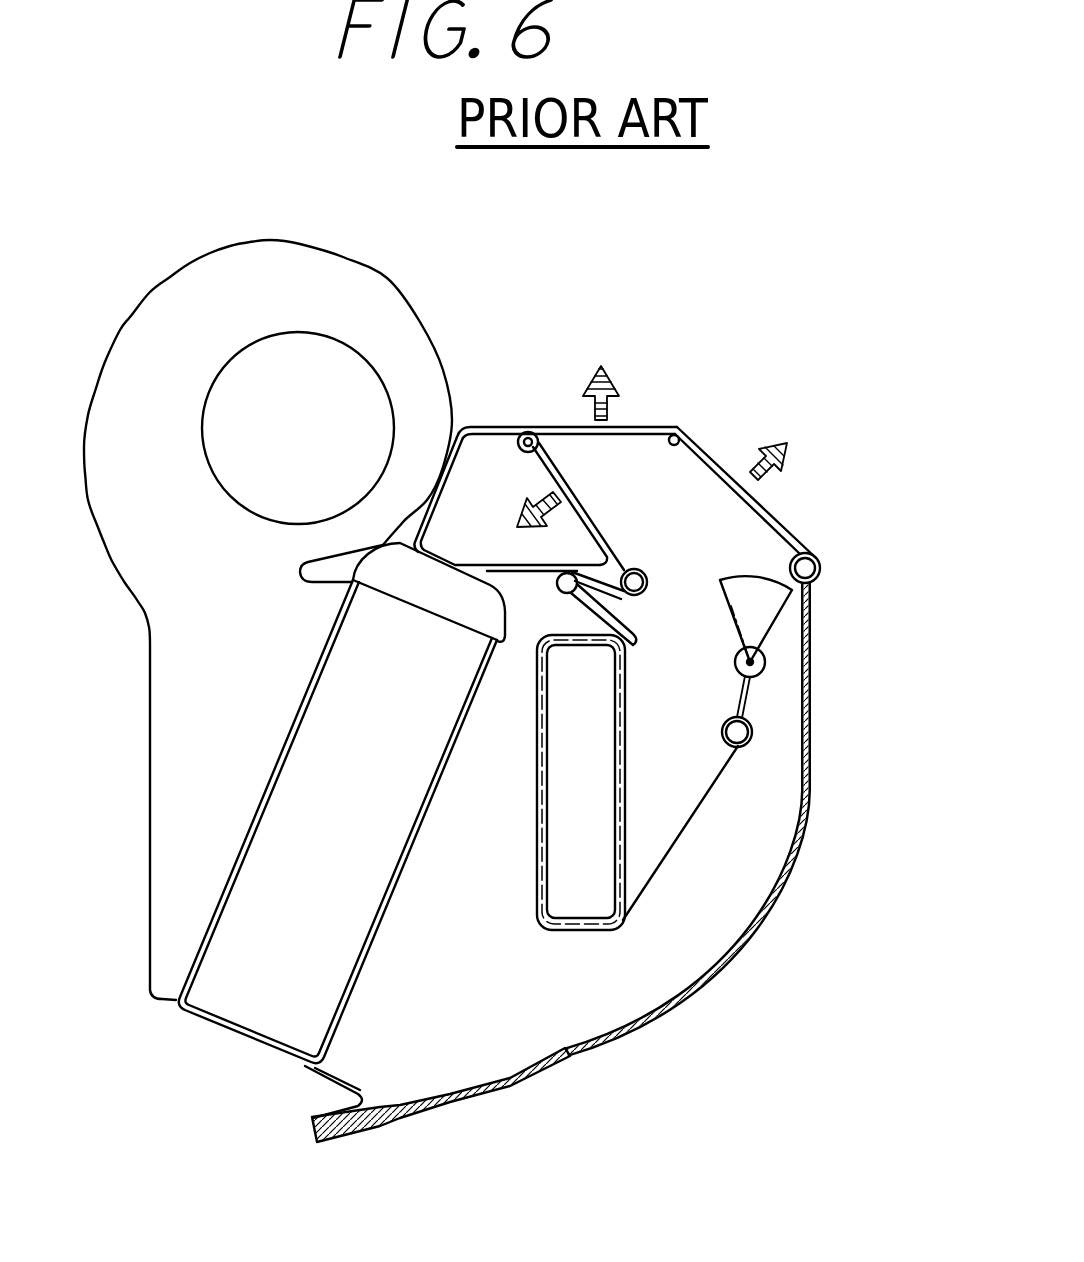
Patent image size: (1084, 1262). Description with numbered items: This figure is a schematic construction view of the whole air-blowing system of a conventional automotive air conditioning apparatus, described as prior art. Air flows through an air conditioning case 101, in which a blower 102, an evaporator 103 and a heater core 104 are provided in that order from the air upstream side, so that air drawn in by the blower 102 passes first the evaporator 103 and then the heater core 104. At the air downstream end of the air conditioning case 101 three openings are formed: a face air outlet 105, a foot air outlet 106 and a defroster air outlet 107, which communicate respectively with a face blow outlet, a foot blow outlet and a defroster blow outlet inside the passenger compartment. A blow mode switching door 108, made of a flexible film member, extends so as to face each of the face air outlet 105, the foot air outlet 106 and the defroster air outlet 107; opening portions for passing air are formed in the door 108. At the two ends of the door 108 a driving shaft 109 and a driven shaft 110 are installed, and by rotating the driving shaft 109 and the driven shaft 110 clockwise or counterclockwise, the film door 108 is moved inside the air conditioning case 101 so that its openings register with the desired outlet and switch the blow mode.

The air conditioning case 101 is at (737, 957).
The blower 102 is at (370, 303).
The evaporator 103 is at (217, 973).
The heater core 104 is at (572, 895).
The face air outlet 105 is at (780, 490).
The foot air outlet 106 is at (517, 487).
The defroster air outlet 107 is at (633, 413).
The blow mode switching door 108 is at (783, 522).
The driving shaft 109 is at (820, 567).
The driven shaft 110 is at (644, 576).